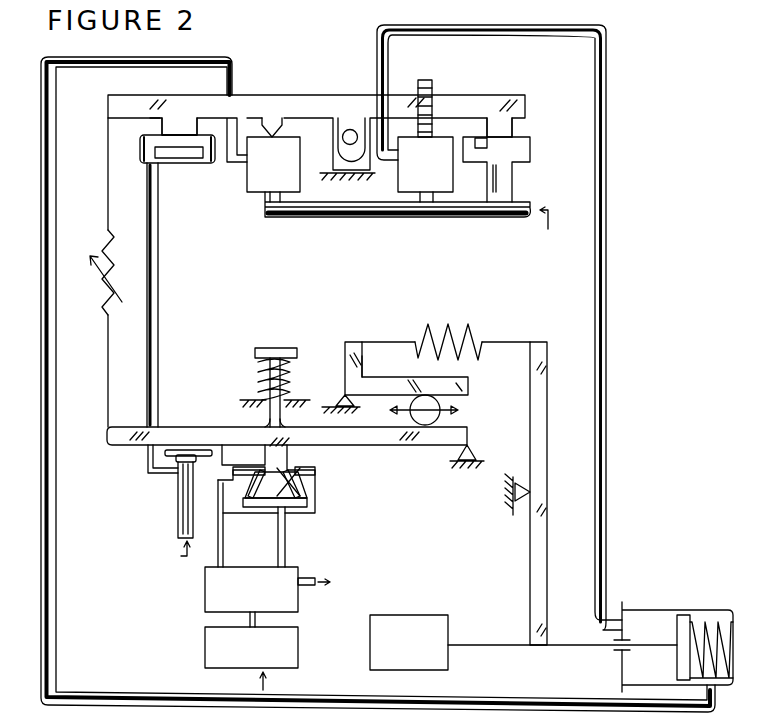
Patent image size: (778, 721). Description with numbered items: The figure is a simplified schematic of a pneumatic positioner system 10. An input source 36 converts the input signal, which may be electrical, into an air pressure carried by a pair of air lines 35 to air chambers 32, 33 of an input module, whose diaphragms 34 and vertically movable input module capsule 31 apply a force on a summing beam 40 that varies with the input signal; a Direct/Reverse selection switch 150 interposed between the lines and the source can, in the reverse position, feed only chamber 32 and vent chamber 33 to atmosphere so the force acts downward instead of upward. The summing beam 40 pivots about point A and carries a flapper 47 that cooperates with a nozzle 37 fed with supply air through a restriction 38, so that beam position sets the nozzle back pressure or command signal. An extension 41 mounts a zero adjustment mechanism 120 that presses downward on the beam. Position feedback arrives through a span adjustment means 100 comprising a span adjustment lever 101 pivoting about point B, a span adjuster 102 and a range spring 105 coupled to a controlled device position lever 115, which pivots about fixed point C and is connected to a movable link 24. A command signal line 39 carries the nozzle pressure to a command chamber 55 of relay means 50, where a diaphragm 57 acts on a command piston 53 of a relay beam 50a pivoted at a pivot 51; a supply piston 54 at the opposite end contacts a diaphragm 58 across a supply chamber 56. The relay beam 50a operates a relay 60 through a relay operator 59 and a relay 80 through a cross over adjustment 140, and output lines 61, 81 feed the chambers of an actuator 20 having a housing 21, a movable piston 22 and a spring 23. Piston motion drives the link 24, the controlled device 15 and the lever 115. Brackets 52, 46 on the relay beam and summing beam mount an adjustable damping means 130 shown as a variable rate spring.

The control system 10 is at (319, 264).
The controlled device 15 is at (440, 670).
The actuator 20 is at (665, 571).
The housing 21 is at (660, 610).
The movable piston 22 is at (677, 645).
The spring 23 is at (724, 620).
The movable link 24 is at (578, 648).
The input module capsule 31 is at (276, 485).
The air chamber 32 is at (258, 470).
The air chamber 33 is at (297, 507).
The diaphragms 34 is at (280, 470).
The air lines 35 is at (223, 541).
The input source 36 is at (205, 643).
The nozzle 37 is at (197, 459).
The restriction 38 is at (178, 487).
The command signal line 39 is at (160, 312).
The summing beam 40 is at (207, 412).
The extension 41 is at (284, 426).
The bracket 46 is at (108, 436).
The flapper 47 is at (177, 450).
The relay means 50 is at (305, 64).
The relay beam 50a is at (306, 96).
The pivot 51 is at (344, 142).
The bracket 52 is at (108, 118).
The command piston 53 is at (161, 124).
The supply piston 54 is at (487, 133).
The command chamber 55 is at (200, 163).
The supply chamber 56 is at (516, 151).
The diaphragm 57 is at (179, 135).
The diaphragm 58 is at (506, 135).
The relay operator 59 is at (285, 133).
The relay 60 is at (285, 169).
The output line 61 is at (163, 71).
The relay 80 is at (437, 169).
The output line 81 is at (482, 37).
The span adjustment means 100 is at (437, 353).
The span adjustment lever 101 is at (372, 372).
The span adjuster 102 is at (450, 413).
The range spring 105 is at (465, 322).
The controlled device position lever 115 is at (530, 605).
The zero adjustment mechanism 120 is at (256, 334).
The adjustable damping means 130 is at (62, 242).
The cross over adjustment 140 is at (432, 84).
The Direct/Reverse selection switch 150 is at (205, 583).
The pivot point A is at (476, 452).
The pivot point B is at (343, 396).
The fixed point C is at (522, 507).